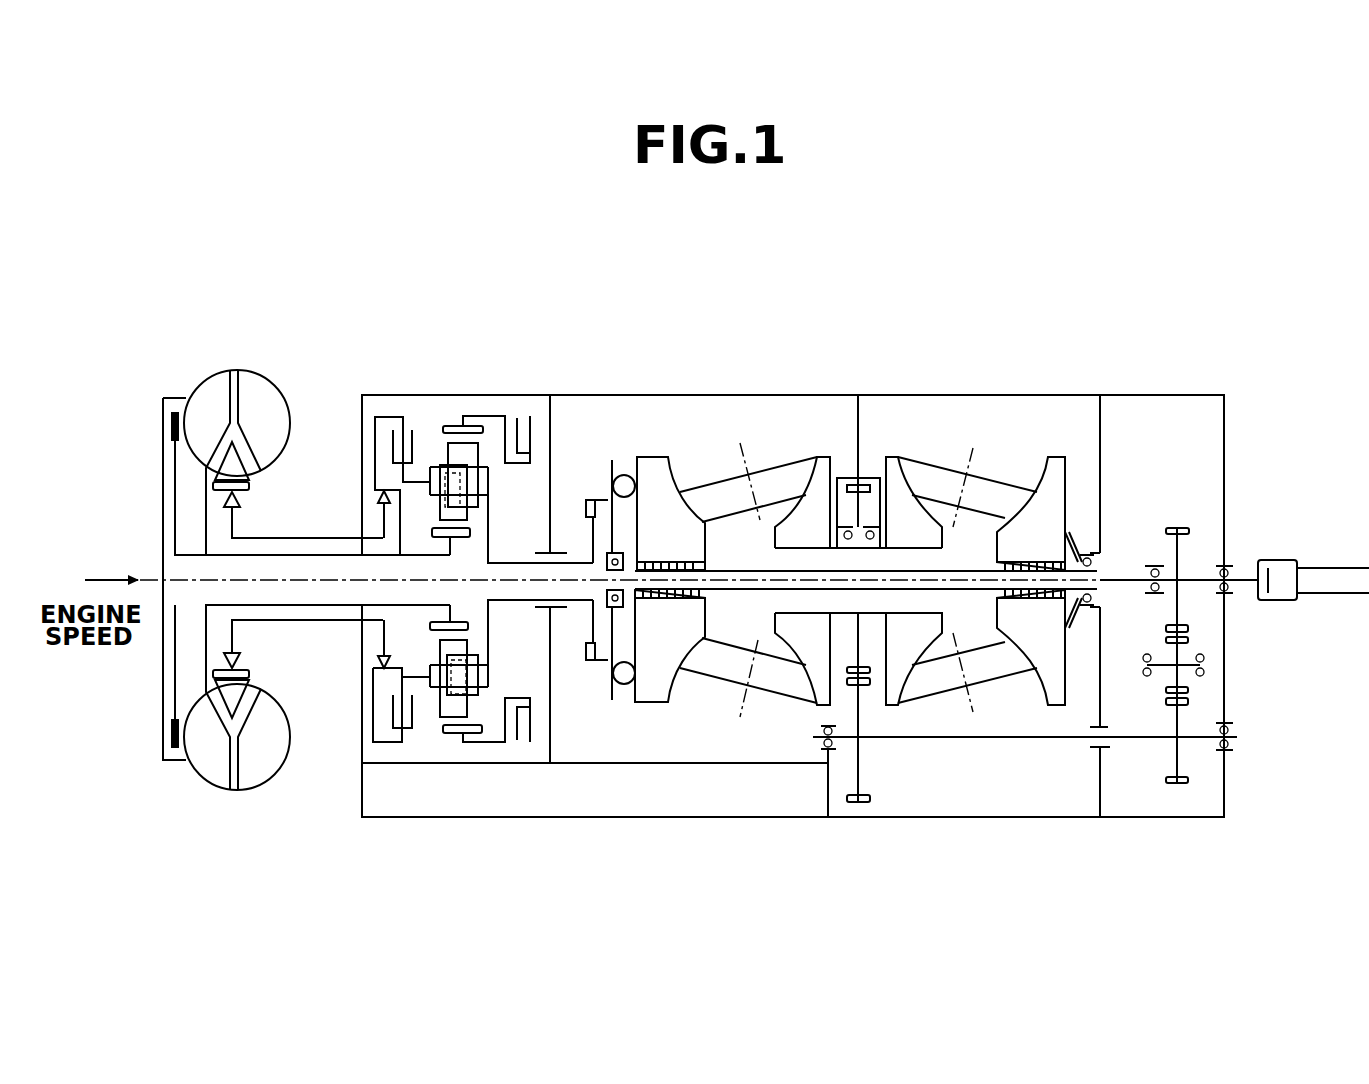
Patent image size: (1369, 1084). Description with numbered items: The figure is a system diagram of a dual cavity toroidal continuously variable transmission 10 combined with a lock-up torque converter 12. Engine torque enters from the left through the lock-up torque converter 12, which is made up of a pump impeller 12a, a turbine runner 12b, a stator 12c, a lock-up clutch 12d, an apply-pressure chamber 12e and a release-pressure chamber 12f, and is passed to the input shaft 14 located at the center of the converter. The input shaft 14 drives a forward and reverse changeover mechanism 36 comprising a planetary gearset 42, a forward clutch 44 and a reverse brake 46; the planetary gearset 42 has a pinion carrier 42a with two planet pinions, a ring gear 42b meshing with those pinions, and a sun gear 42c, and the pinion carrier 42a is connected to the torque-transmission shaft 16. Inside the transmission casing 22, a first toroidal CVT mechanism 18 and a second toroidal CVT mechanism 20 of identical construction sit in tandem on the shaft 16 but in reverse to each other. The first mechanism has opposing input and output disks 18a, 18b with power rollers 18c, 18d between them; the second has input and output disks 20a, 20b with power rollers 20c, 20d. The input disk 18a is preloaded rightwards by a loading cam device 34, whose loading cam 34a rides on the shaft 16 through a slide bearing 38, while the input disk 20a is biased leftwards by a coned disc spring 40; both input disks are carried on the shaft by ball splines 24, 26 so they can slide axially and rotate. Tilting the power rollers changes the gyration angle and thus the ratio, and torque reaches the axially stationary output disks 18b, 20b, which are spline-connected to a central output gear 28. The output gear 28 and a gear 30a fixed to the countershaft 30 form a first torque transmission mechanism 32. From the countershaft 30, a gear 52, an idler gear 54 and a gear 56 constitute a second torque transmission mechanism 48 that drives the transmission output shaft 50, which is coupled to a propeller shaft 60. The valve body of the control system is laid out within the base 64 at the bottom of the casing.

The toroidal continuously variable transmission 10 is at (818, 331).
The lock-up torque converter 12 is at (262, 534).
The pump impeller 12a is at (268, 393).
The turbine runner 12b is at (213, 402).
The stator 12c is at (246, 478).
The lock-up clutch 12d is at (173, 462).
The apply-pressure chamber 12e is at (187, 675).
The release-pressure chamber 12f is at (163, 508).
The input shaft 14 is at (323, 607).
The torque-transmission shaft 16 is at (723, 597).
The first toroidal CVT mechanism 18 is at (770, 602).
The input disk 18a is at (680, 452).
The output disk 18b is at (818, 455).
The power roller 18c is at (745, 478).
The power roller 18d is at (802, 702).
The second toroidal CVT mechanism 20 is at (994, 586).
The input disk 20a is at (1067, 460).
The output disk 20b is at (888, 457).
The power roller 20c is at (992, 480).
The power roller 20d is at (927, 697).
The transmission casing 22 is at (560, 763).
The ball spline 24 is at (703, 635).
The ball spline 26 is at (980, 600).
The output gear 28 is at (852, 478).
The countershaft 30 is at (1055, 740).
The gear 30a is at (850, 803).
The first torque transmission mechanism 32 is at (868, 700).
The loading cam device 34 is at (611, 427).
The loading cam 34a is at (612, 478).
The forward and reverse changeover mechanism 36 is at (426, 417).
The slide bearing 38 is at (613, 600).
The coned disc spring 40 is at (1068, 545).
The planetary gearset 42 is at (491, 598).
The pinion carrier 42a is at (470, 632).
The ring gear 42b is at (457, 426).
The sun gear 42c is at (465, 540).
The forward clutch 44 is at (410, 430).
The reverse brake 46 is at (523, 416).
The second torque transmission mechanism 48 is at (1200, 618).
The transmission output shaft 50 is at (1240, 573).
The gear 52 is at (1188, 780).
The idler gear 54 is at (1188, 692).
The gear 56 is at (1183, 525).
The propeller shaft 60 is at (1335, 568).
The base 64 is at (795, 795).